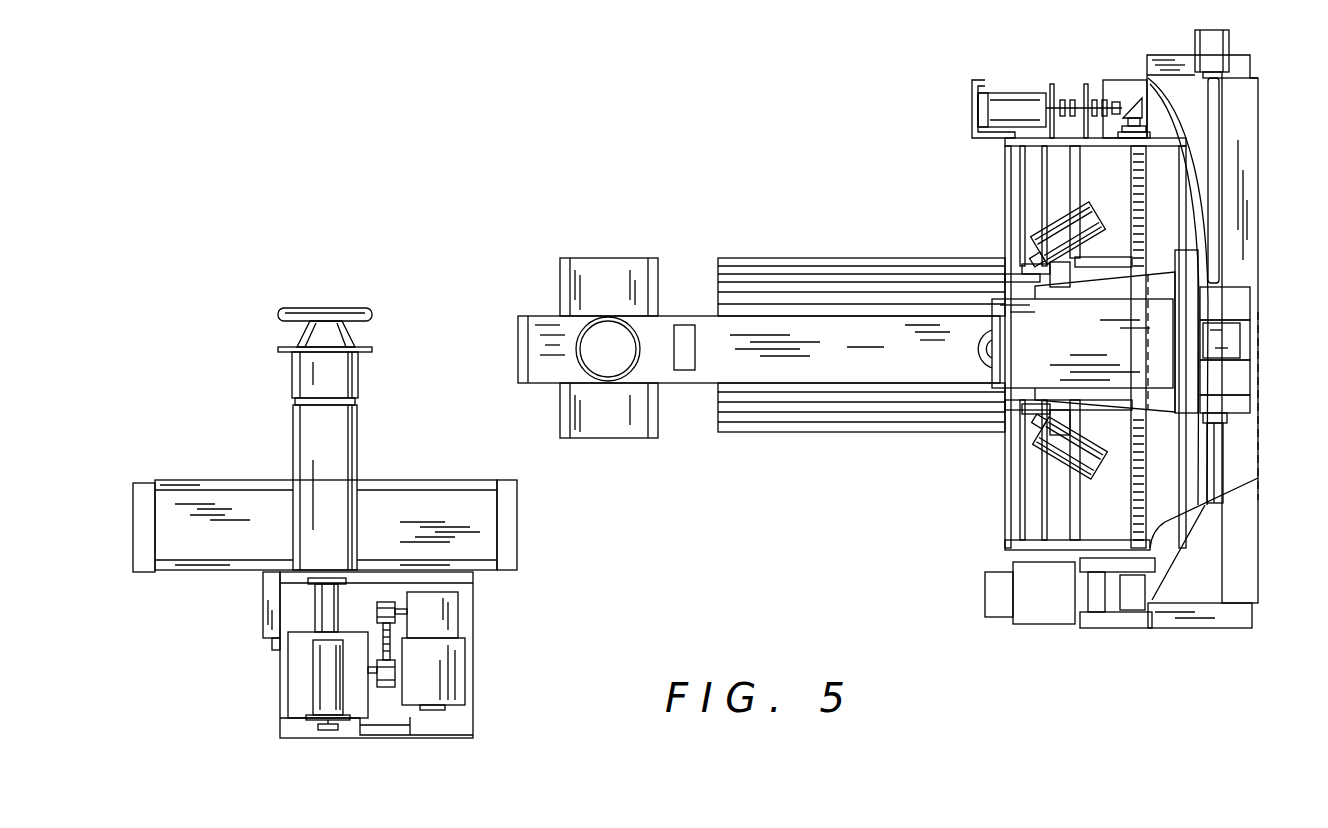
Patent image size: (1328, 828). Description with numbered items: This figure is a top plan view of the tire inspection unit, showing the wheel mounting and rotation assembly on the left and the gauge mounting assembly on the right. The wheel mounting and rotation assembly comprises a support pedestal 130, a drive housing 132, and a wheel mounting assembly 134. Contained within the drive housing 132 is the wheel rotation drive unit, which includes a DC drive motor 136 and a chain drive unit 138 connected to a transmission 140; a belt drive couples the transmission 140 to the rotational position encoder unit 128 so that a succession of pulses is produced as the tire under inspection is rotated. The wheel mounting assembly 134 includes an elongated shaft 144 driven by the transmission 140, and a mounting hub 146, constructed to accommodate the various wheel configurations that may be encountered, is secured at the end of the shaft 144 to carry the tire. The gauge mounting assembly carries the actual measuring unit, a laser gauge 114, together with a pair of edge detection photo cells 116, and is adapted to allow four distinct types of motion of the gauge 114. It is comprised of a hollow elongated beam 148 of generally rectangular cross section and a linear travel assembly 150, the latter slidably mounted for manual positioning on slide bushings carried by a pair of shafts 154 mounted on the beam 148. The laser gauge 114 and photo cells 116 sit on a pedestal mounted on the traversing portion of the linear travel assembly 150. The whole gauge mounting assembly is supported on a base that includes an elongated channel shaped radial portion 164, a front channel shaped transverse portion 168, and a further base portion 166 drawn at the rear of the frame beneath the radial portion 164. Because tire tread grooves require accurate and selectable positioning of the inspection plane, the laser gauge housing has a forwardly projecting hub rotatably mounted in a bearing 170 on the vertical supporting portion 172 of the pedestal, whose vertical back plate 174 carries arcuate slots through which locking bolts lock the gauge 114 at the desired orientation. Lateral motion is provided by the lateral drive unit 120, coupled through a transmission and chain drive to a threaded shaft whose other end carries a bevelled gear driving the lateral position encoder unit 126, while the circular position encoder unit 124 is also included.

The laser gauge 114 is at (1076, 342).
The edge detection photo cells 116 is at (1086, 205).
The lateral drive unit 120 is at (1042, 622).
The circular position encoder unit 124 is at (1230, 72).
The lateral position encoder unit 126 is at (1005, 98).
The rotational position encoder unit 128 is at (318, 685).
The support pedestal 130 is at (262, 512).
The drive housing 132 is at (414, 740).
The wheel mounting assembly 134 is at (372, 374).
The DC drive motor 136 is at (452, 682).
The chain drive unit 138 is at (393, 648).
The transmission 140 is at (296, 665).
The elongated shaft 144 is at (318, 606).
The mounting hub 146 is at (346, 338).
The hollow elongated beam 148 is at (759, 349).
The linear travel assembly 150 is at (1175, 496).
The shafts 154 is at (790, 275).
The radial portion 164 is at (1259, 352).
The base plate 166 is at (1200, 627).
The transverse portion 168 is at (572, 440).
The bearing 170 is at (1238, 333).
The vertical supporting portion 172 is at (1243, 385).
The vertical back plate 174 is at (1204, 292).